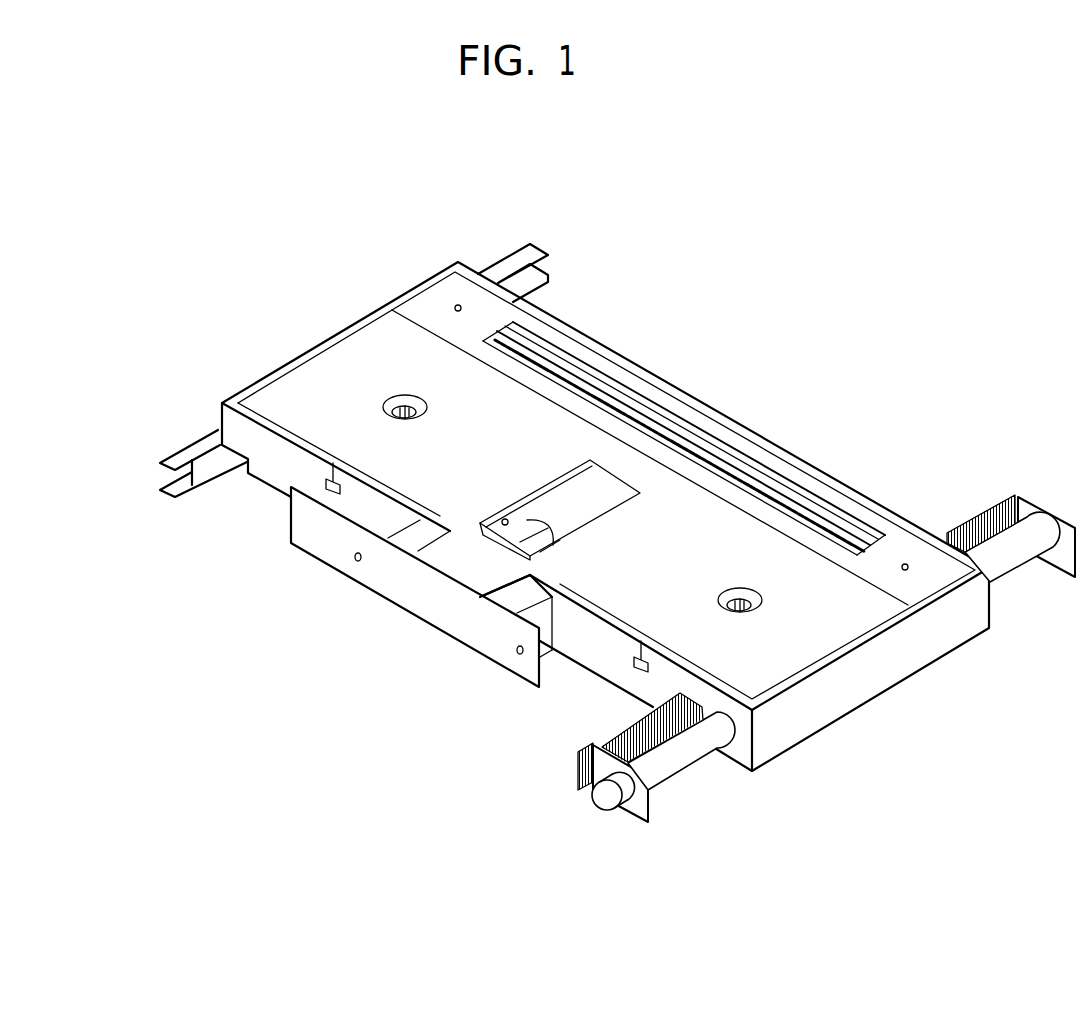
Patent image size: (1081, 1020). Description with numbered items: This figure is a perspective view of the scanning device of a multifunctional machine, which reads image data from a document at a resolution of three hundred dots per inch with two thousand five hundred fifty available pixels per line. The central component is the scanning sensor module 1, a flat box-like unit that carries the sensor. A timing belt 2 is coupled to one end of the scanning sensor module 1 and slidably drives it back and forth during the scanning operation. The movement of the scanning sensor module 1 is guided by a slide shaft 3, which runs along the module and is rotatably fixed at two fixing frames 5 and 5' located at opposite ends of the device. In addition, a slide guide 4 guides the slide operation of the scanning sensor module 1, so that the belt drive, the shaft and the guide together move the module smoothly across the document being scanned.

The scanning sensor module 1 is at (268, 470).
The timing belt 2 is at (606, 737).
The slide shaft 3 is at (1003, 557).
The slide guide 4 is at (520, 258).
The fixing frame 5 is at (625, 831).
The fixing frame 5' is at (1040, 474).